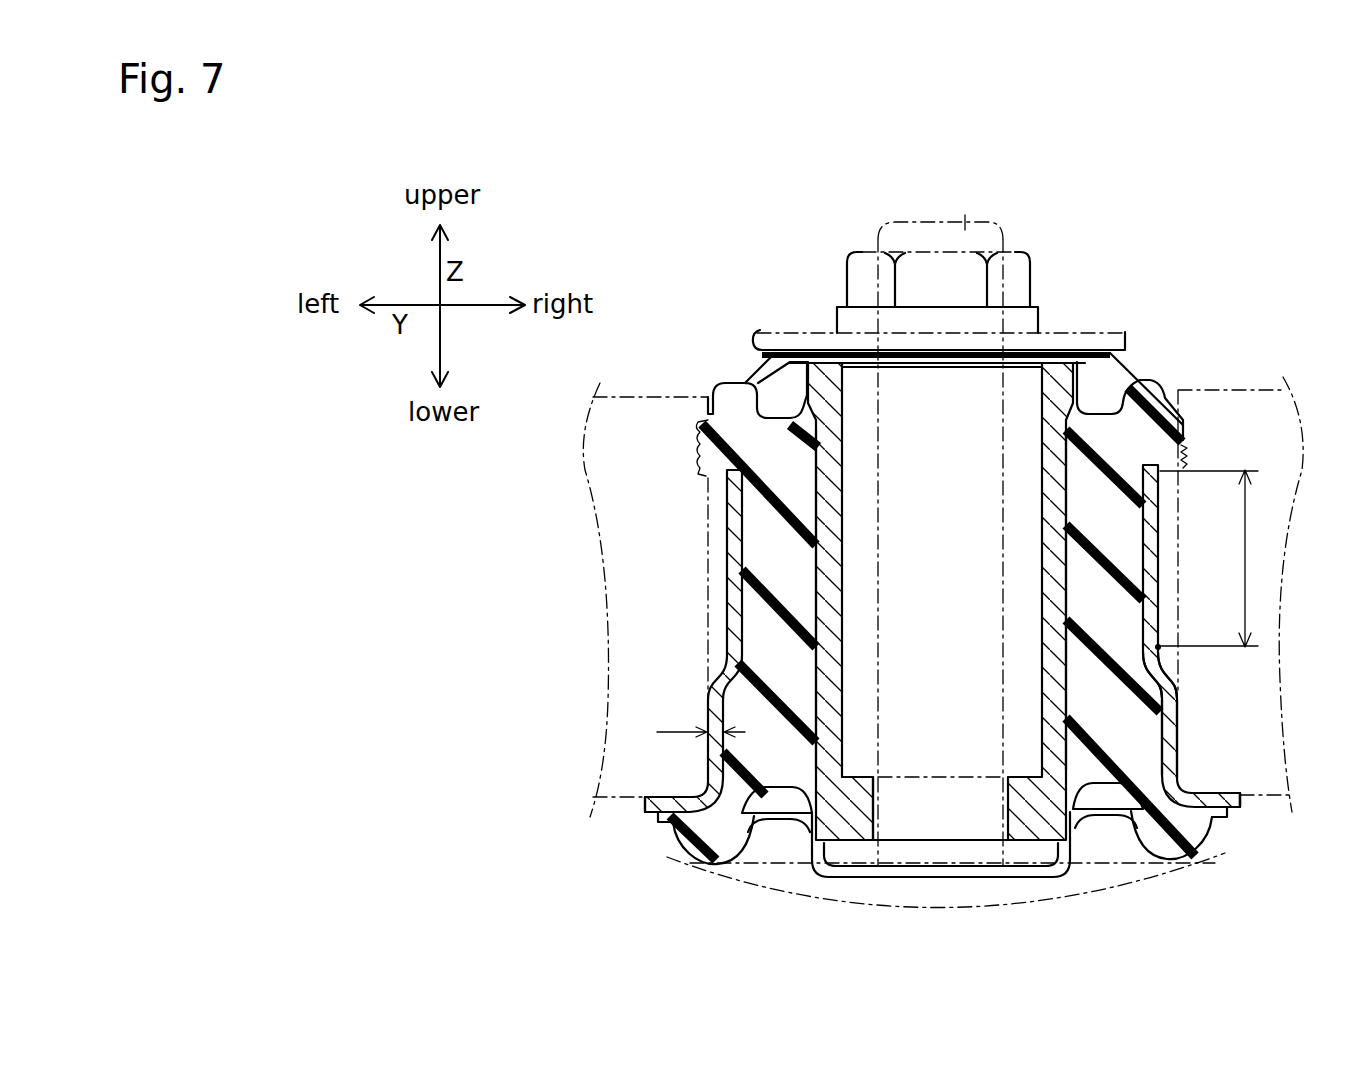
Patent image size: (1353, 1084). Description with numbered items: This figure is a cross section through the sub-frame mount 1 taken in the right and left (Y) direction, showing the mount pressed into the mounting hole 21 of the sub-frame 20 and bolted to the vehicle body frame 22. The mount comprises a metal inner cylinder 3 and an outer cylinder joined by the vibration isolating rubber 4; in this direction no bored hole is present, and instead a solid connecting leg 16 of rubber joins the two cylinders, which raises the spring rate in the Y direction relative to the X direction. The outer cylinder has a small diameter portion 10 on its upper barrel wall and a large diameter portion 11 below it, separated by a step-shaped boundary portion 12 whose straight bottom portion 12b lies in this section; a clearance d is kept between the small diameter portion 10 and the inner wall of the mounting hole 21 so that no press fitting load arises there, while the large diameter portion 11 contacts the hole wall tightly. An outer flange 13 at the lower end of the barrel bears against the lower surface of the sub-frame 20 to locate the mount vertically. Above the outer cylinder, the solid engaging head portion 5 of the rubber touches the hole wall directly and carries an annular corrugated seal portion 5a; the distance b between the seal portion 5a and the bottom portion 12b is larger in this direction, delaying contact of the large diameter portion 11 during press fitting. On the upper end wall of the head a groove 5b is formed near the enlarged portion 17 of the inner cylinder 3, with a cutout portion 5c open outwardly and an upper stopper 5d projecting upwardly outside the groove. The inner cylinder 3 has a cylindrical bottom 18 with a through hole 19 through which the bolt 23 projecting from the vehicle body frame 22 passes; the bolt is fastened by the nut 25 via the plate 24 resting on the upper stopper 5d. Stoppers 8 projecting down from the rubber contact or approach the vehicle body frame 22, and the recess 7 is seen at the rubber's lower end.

The sub-frame mount 1 is at (725, 272).
The inner cylinder 3 is at (822, 456).
The vibration isolating rubber 4 is at (765, 580).
The engaging head portion 5 is at (957, 372).
The seal portion 5a is at (1185, 458).
The groove 5b is at (1117, 381).
The cutout portion 5c is at (1133, 378).
The upper stopper 5d is at (1102, 411).
The recess 7 is at (785, 820).
The stopper 8 is at (705, 856).
The small diameter portion 10 is at (1150, 521).
The large diameter portion 11 is at (1172, 725).
The boundary portion 12 is at (1172, 663).
The bottom portion 12b is at (1159, 647).
The outer flange 13 is at (1210, 796).
The connecting leg 16 is at (815, 556).
The enlarged portion 17 is at (825, 374).
The cylindrical bottom 18 is at (869, 777).
The through hole 19 is at (960, 785).
The sub-frame 20 is at (634, 397).
The mounting hole 21 is at (713, 488).
The vehicle body frame 22 is at (948, 892).
The bolt 23 is at (968, 221).
The plate 24 is at (1040, 340).
The nut 25 is at (1016, 262).
The distance b is at (1213, 558).
The clearance d is at (697, 721).